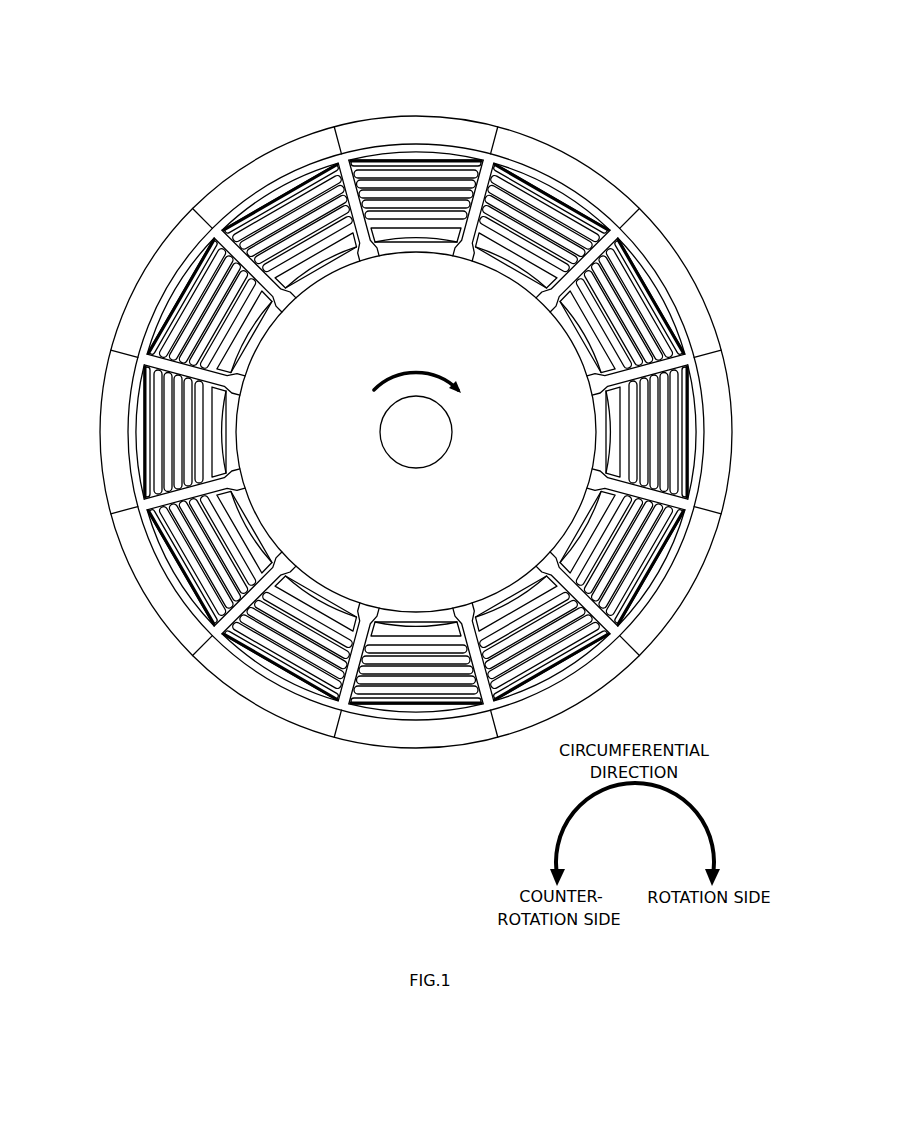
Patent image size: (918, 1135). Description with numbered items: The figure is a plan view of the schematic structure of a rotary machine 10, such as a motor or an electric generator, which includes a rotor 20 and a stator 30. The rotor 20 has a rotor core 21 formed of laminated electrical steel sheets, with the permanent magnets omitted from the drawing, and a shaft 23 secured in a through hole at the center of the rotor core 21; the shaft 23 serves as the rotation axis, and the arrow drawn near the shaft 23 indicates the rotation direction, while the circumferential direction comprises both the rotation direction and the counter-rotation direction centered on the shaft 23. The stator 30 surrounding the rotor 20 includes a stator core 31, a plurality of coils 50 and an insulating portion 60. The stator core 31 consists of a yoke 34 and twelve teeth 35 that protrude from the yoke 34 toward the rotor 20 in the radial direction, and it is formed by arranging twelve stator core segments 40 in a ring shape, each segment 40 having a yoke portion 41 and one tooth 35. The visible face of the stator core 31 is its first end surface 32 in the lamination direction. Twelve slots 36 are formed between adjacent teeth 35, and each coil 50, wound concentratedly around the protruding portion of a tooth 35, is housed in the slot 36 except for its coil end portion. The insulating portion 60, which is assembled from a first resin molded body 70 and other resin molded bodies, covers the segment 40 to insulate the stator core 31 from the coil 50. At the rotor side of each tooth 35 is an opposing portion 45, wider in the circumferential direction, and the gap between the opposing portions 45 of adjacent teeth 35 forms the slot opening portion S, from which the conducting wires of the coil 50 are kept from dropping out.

The rotary machine 10 is at (595, 47).
The rotor 20 is at (477, 236).
The rotor core 21 is at (510, 347).
The shaft 23 is at (418, 468).
The stator 30 is at (583, 132).
The stator core 31 is at (158, 215).
The first end surface 32 is at (413, 736).
The yoke 34 is at (150, 233).
The tooth 35 is at (247, 332).
The opposing portion 45 is at (416, 432).
The slot 36 is at (170, 495).
The stator core segment 40 is at (155, 253).
The yoke portion 41 is at (155, 280).
The coil 50 is at (195, 347).
The insulating portion 60 is at (155, 325).
The first resin molded body 70 is at (416, 432).
The slot opening portion S is at (228, 483).